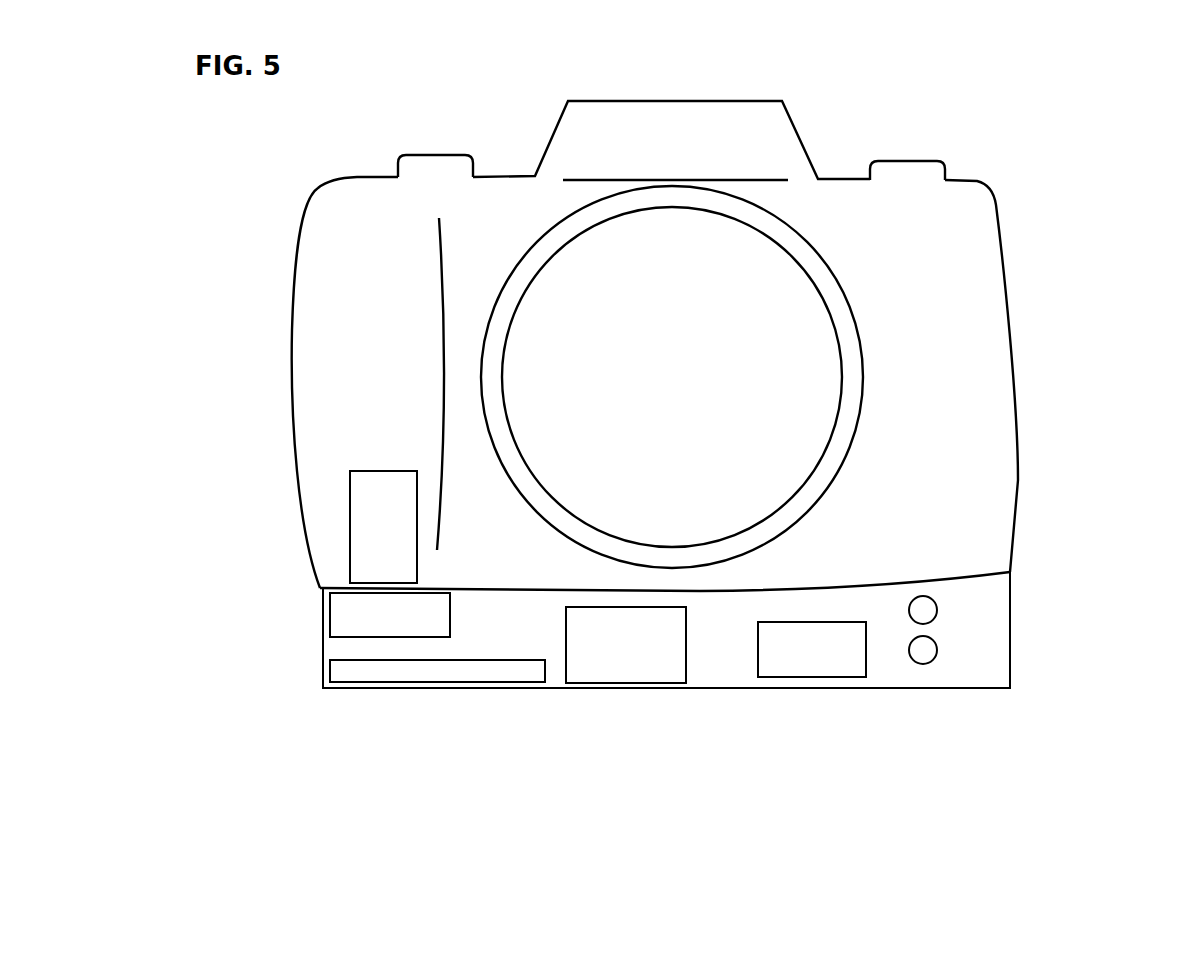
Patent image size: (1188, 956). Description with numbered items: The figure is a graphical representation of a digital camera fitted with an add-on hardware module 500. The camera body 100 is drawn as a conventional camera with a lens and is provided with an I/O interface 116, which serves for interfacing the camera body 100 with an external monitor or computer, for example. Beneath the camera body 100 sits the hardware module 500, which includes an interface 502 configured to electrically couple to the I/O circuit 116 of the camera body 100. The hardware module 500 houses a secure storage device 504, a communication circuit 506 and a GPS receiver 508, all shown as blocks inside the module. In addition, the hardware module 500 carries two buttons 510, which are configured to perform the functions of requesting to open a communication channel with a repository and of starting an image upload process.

The camera body 100 is at (282, 269).
The I/O interface 116 is at (383, 527).
The hardware module 500 is at (643, 697).
The interface 502 is at (368, 617).
The secure storage device 504 is at (626, 645).
The communication circuit 506 is at (349, 673).
The GPS receiver 508 is at (814, 663).
The buttons 510 is at (923, 650).